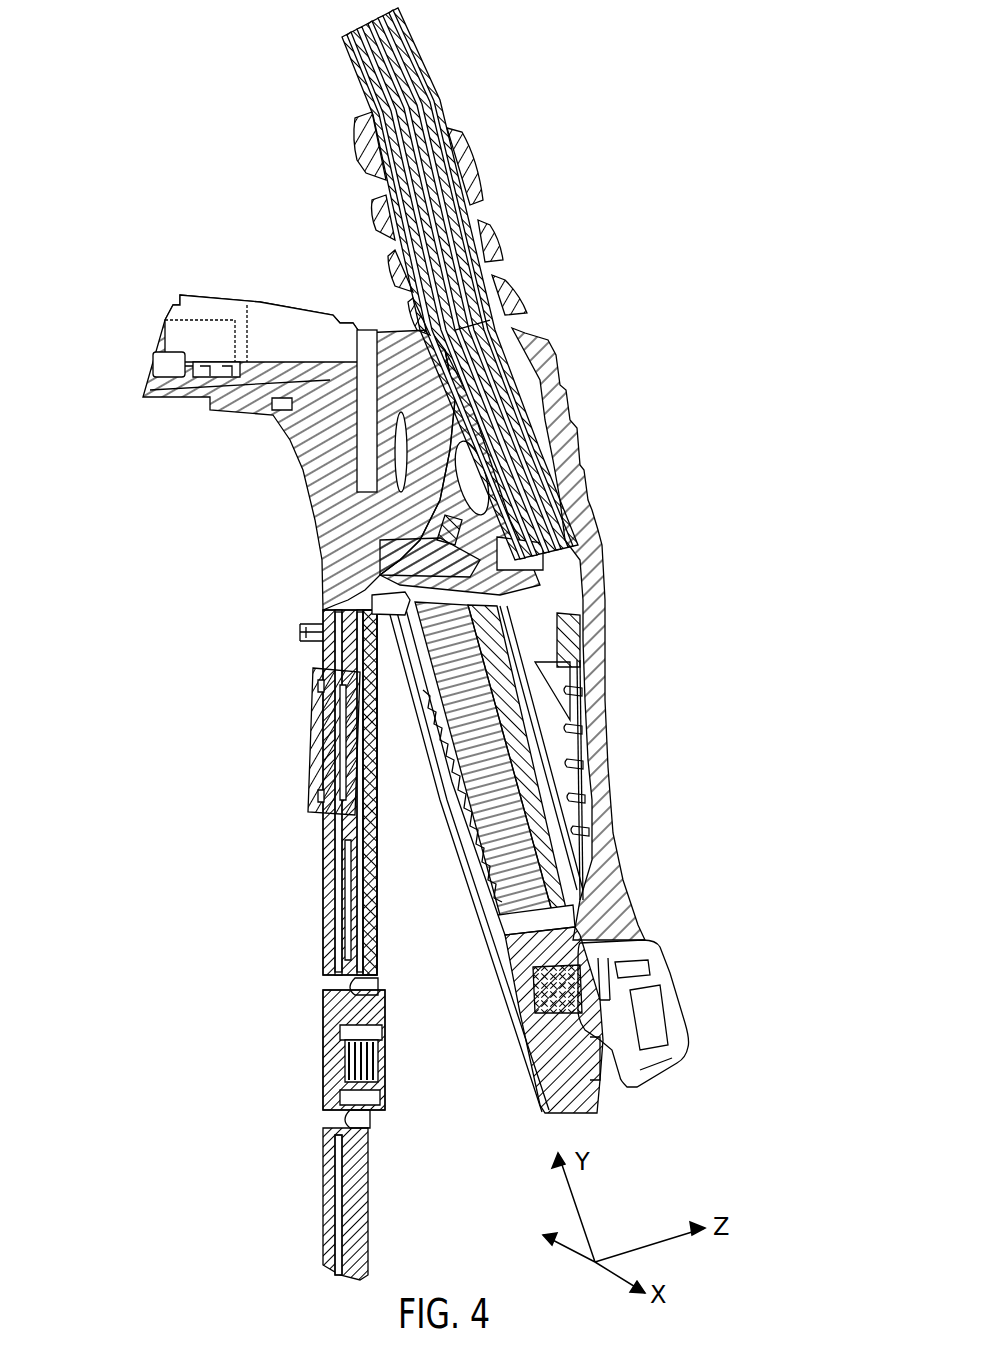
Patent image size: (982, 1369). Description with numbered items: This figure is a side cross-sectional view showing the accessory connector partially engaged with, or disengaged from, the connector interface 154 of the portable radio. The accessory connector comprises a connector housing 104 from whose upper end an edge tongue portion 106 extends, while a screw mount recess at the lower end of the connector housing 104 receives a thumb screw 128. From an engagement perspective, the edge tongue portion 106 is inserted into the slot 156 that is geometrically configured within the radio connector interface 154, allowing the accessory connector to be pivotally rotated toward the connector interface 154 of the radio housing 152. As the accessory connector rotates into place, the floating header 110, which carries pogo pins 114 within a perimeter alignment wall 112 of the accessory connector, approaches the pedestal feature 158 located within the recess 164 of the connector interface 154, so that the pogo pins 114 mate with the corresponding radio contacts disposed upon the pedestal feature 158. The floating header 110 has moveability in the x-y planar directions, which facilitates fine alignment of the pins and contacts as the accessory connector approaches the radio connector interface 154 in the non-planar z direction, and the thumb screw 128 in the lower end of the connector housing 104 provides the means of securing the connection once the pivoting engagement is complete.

The connector housing 104 is at (617, 830).
The edge tongue portion 106 is at (378, 542).
The floating header 110 is at (420, 565).
The perimeter alignment wall 112 is at (330, 637).
The pogo pins 114 is at (433, 752).
The thumb screw 128 is at (687, 1033).
The radio housing 152 is at (323, 1210).
The connector interface 154 is at (322, 607).
The slot 156 is at (346, 506).
The pedestal feature 158 is at (358, 912).
The recess 164 is at (368, 598).